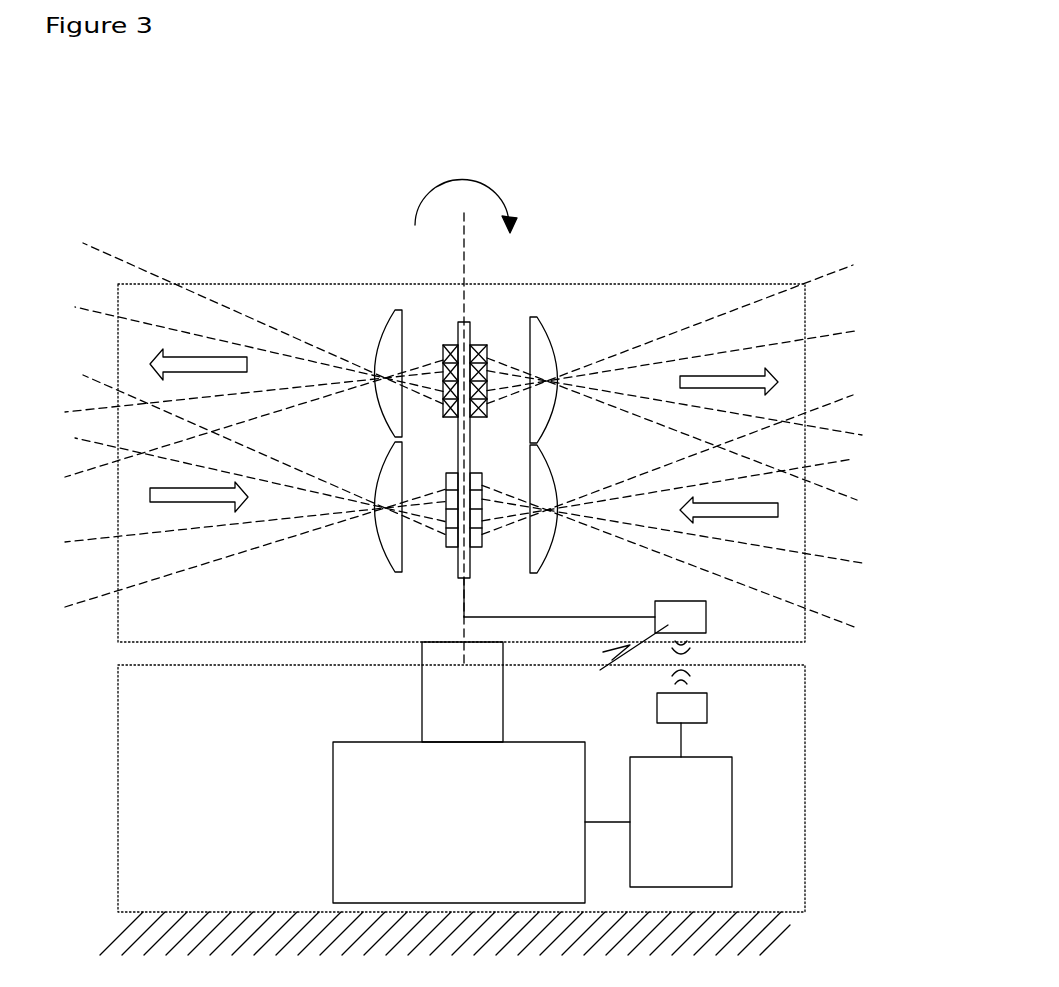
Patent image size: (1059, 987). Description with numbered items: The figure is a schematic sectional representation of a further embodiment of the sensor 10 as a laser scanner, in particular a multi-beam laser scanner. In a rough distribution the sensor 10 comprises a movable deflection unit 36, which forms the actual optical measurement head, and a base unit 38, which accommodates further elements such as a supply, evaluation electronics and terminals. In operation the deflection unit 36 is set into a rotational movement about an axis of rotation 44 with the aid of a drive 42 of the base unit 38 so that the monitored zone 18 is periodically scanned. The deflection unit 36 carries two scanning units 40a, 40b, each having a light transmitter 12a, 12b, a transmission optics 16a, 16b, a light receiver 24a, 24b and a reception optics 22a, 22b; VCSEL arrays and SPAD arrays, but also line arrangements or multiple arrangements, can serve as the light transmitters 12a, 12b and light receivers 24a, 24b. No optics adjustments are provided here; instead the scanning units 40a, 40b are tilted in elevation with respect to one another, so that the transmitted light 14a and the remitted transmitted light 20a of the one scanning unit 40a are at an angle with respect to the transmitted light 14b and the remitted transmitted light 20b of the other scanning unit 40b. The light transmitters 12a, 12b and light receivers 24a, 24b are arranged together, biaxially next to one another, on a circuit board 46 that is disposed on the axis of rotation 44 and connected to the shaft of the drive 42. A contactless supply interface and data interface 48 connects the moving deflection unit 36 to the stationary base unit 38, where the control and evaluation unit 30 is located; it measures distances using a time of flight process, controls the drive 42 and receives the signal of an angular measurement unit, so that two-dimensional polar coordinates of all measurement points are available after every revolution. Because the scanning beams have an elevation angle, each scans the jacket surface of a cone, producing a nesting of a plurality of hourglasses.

The sensor 10 is at (702, 132).
The light transmitter 12a is at (446, 350).
The light transmitter 12b is at (488, 350).
The transmitted light 14a is at (118, 258).
The transmitted light 14b is at (850, 292).
The transmission optics 16a is at (380, 340).
The transmission optics 16b is at (550, 346).
The monitored zone 18 is at (13, 236).
The remitted transmitted light 20a is at (102, 593).
The remitted transmitted light 20b is at (840, 462).
The reception optics 22a is at (380, 542).
The reception optics 22b is at (548, 545).
The light receiver 24a is at (443, 543).
The light receiver 24b is at (482, 545).
The control and evaluation unit 30 is at (693, 858).
The deflection unit 36 is at (247, 283).
The base unit 38 is at (152, 841).
The scanning unit 40a is at (377, 270).
The scanning unit 40b is at (573, 268).
The drive 42 is at (382, 837).
The axis of rotation 44 is at (462, 245).
The circuit board 46 is at (461, 463).
The contactless supply interface and data interface 48 is at (677, 710).